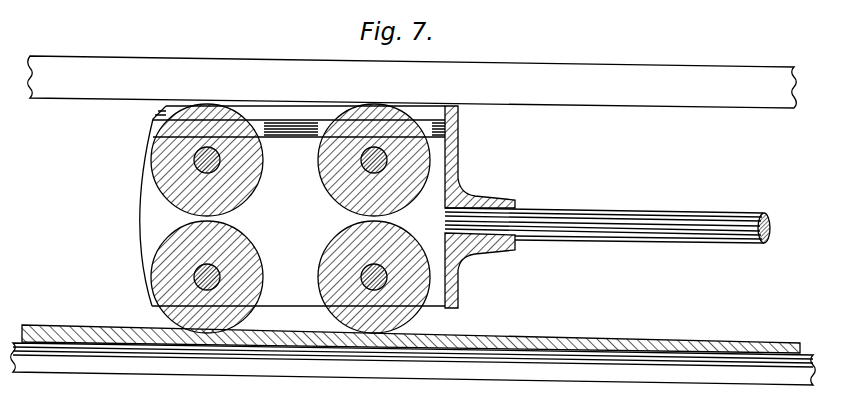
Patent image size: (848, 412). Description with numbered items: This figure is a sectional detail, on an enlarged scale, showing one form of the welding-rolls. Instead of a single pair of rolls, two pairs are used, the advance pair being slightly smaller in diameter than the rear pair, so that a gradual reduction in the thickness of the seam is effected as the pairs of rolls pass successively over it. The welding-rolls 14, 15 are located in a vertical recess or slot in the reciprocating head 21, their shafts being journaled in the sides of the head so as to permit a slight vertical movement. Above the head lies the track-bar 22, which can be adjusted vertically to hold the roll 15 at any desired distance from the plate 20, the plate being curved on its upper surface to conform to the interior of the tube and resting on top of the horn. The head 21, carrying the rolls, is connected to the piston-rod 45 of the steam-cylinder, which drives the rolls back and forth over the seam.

The welding-roll 14 is at (316, 162).
The welding-roll 15 is at (316, 280).
The plate 20 is at (413, 355).
The reciprocating head 21 is at (458, 158).
The track-bar 22 is at (412, 82).
The piston-rod 45 is at (580, 218).